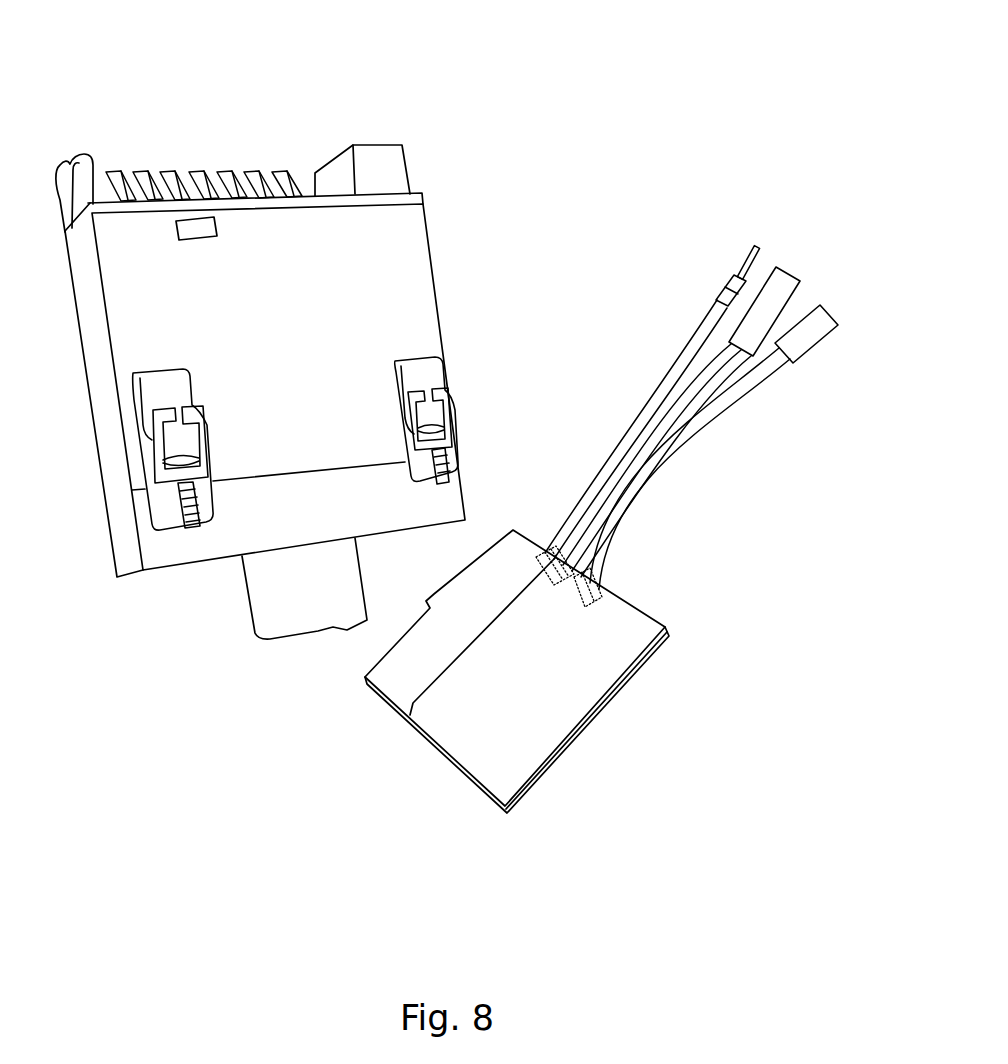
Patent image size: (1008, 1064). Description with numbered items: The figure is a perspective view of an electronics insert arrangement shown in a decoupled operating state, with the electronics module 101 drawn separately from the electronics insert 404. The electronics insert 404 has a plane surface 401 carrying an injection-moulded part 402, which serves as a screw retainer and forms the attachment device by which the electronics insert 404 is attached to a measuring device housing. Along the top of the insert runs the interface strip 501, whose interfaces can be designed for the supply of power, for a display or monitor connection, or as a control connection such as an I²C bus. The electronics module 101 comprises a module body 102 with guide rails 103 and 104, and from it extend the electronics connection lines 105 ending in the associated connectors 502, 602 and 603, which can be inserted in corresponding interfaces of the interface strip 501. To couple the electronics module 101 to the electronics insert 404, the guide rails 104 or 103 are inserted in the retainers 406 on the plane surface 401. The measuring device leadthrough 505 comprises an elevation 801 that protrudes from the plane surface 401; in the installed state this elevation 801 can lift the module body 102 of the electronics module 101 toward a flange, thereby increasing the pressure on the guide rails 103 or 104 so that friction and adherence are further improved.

The electronics module 101 is at (700, 608).
The module body 102 is at (470, 737).
The guide rail 103 is at (615, 700).
The guide rail 104 is at (488, 562).
The electronics connection lines 105 is at (720, 408).
The plane surface 401 is at (405, 265).
The injection-moulded part 402 is at (482, 375).
The electronics insert 404 is at (514, 158).
The retainers 406 is at (400, 423).
The interface strip 501 is at (255, 170).
The connector 502 is at (805, 352).
The measuring device leadthrough 505 is at (270, 598).
The connector 602 is at (781, 277).
The connector 603 is at (743, 265).
The elevation 801 is at (293, 493).